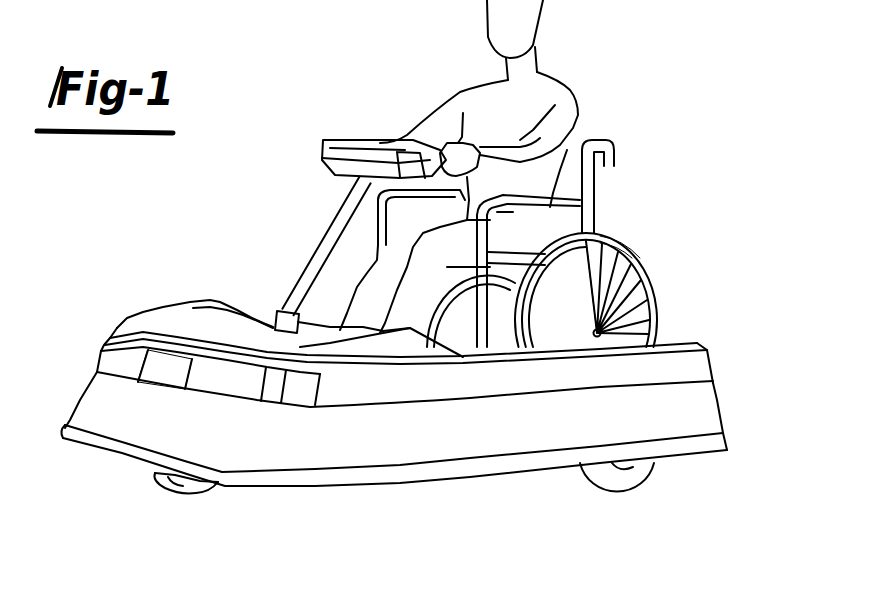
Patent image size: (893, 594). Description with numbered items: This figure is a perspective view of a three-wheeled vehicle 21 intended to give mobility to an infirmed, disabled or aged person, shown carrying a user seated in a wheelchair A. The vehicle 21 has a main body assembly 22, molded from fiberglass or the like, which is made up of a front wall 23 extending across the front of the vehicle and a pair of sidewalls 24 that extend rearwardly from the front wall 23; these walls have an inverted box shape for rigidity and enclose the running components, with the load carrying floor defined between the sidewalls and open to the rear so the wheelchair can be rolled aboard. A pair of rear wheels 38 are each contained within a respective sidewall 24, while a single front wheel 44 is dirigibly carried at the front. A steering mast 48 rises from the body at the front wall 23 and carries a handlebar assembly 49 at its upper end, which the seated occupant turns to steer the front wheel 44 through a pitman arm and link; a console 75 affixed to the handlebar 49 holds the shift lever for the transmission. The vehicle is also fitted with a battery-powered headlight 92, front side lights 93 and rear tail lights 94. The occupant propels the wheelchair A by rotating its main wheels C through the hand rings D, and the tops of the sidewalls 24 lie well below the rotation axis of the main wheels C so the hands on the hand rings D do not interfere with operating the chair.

The vehicle 21 is at (662, 292).
The main body assembly 22 is at (702, 340).
The front wall 23 is at (148, 314).
The sidewalls 24 is at (716, 388).
The rear wheels 38 is at (650, 463).
The front wheel 44 is at (173, 492).
The steering mast 48 is at (326, 243).
The handlebar assembly 49 is at (463, 113).
The console 75 is at (360, 148).
The headlight 92 is at (160, 376).
The front side lights 93 is at (107, 347).
The rear tail lights 94 is at (710, 364).
The hand rings D is at (600, 240).
The wheelchair A is at (620, 236).
The main wheels C is at (625, 240).